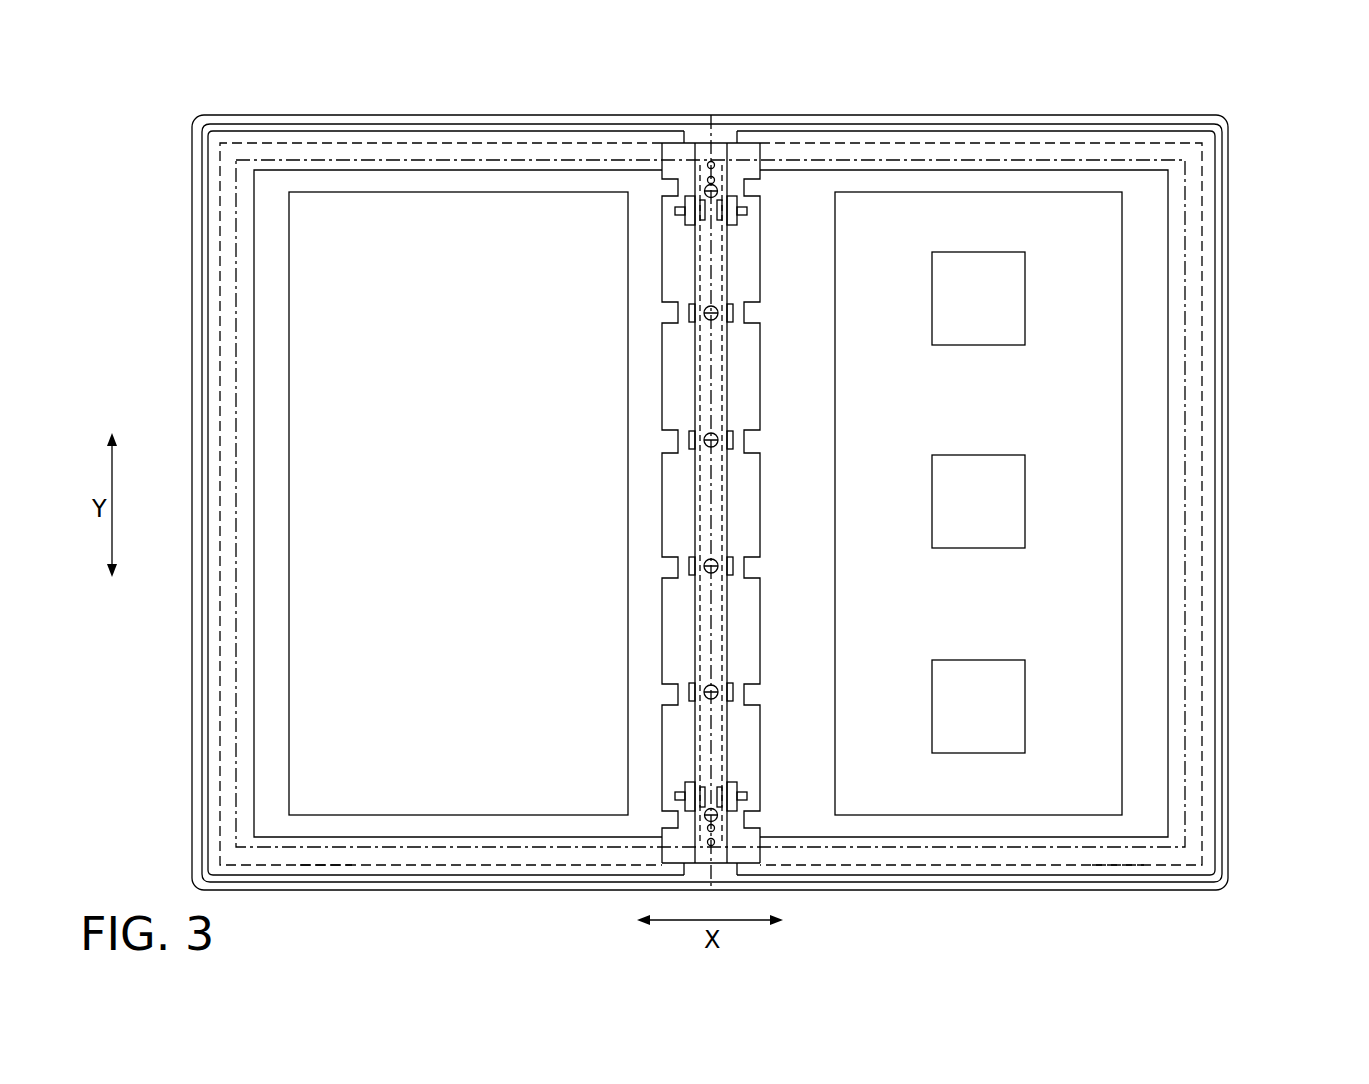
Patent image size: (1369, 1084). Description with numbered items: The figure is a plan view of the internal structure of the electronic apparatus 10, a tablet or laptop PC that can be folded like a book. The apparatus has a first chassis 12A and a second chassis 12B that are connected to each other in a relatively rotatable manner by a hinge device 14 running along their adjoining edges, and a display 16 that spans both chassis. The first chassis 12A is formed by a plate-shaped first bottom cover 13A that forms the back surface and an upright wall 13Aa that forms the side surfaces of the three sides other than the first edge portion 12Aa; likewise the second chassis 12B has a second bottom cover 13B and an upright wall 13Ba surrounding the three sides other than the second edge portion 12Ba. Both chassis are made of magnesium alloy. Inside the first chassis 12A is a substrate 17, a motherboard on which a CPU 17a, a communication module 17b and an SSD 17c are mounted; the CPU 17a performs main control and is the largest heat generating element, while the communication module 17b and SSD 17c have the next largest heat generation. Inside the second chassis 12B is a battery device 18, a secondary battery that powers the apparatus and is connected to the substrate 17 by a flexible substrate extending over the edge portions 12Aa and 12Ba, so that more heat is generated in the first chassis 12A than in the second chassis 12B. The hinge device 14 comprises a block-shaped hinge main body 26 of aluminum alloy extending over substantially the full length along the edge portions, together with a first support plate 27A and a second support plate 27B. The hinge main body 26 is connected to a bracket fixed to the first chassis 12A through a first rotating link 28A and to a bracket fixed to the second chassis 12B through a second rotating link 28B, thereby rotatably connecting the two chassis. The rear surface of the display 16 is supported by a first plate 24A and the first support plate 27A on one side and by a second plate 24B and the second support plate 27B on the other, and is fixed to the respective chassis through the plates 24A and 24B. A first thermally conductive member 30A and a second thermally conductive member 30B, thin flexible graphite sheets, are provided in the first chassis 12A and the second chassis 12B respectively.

The electronic apparatus 10 is at (150, 92).
The first chassis 12A is at (970, 109).
The second chassis 12B is at (400, 110).
The first edge portion 12Aa is at (700, 131).
The second edge portion 12Ba is at (722, 131).
The first bottom cover 13A is at (1185, 135).
The second bottom cover 13B is at (235, 137).
The upright wall 13Aa is at (1228, 186).
The upright wall 13Ba is at (192, 186).
The hinge device 14 is at (776, 267).
The display 16 is at (1080, 152).
The substrate 17 is at (1020, 775).
The CPU 17a is at (1025, 298).
The communication module 17b is at (1025, 503).
The SSD 17c is at (1025, 708).
The battery device 18 is at (437, 770).
The first plate 24A is at (1118, 872).
The second plate 24B is at (326, 872).
The hinge main body 26 is at (705, 378).
The first support plate 27A is at (752, 497).
The second support plate 27B is at (680, 497).
The first rotating link 28A is at (747, 211).
The second rotating link 28B is at (677, 211).
The first thermally conductive member 30A is at (922, 183).
The second thermally conductive member 30B is at (325, 183).